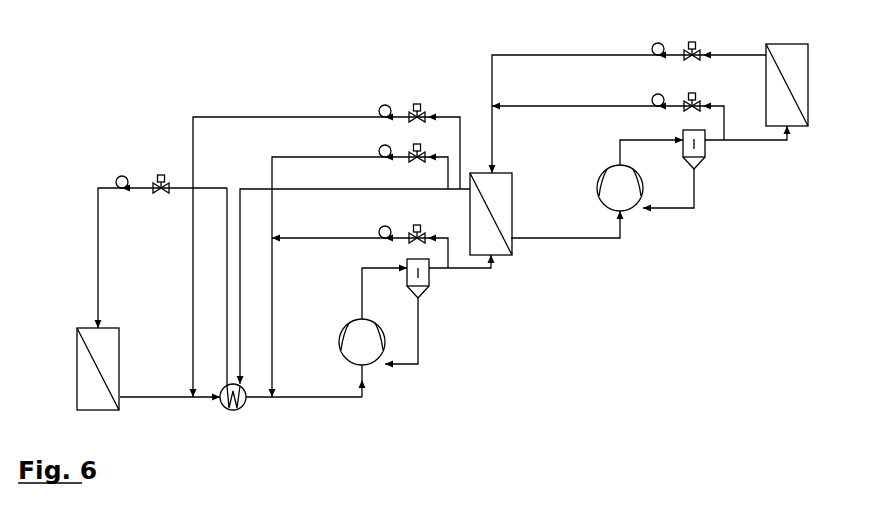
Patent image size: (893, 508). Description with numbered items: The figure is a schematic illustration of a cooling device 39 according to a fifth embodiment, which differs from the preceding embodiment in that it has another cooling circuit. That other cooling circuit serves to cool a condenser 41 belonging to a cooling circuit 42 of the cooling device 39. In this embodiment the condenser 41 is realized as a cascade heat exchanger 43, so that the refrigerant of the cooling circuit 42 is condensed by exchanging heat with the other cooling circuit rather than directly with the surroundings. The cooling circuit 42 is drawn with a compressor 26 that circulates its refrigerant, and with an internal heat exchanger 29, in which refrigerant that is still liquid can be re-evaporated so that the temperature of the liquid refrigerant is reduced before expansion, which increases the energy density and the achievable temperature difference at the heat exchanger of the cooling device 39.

The cooling device 39 is at (145, 97).
The cooling circuit 42 is at (264, 112).
The cascade heat exchanger 43 is at (652, 0).
The condenser 41 is at (498, 247).
The compressor 26 is at (370, 349).
The internal heat exchanger 29 is at (233, 410).